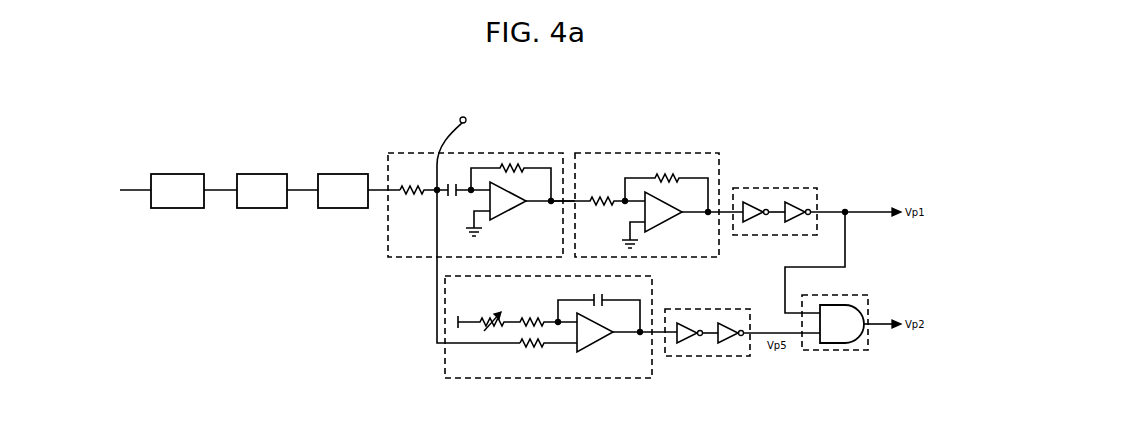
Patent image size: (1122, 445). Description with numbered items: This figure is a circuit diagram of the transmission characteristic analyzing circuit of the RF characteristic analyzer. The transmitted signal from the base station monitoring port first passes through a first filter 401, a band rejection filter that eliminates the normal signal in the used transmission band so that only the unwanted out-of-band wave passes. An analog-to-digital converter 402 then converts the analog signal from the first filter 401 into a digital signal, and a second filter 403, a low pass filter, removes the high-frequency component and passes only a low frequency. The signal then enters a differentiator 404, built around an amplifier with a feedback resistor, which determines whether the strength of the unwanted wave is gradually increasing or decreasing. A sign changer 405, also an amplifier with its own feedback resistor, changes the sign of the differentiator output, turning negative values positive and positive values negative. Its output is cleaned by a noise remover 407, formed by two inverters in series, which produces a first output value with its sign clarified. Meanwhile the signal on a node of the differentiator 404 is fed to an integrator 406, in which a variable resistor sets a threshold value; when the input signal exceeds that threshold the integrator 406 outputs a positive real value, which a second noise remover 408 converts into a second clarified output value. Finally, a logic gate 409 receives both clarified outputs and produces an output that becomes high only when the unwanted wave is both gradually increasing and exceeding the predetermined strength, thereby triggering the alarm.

The first filter 401 is at (180, 174).
The analog-to-digital converter 402 is at (263, 174).
The second filter 403 is at (345, 174).
The differentiator 404 is at (497, 153).
The sign changer 405 is at (648, 153).
The integrator 406 is at (445, 365).
The noise remover 407 is at (775, 188).
The noise remover 408 is at (710, 356).
The logic gate 409 is at (833, 350).